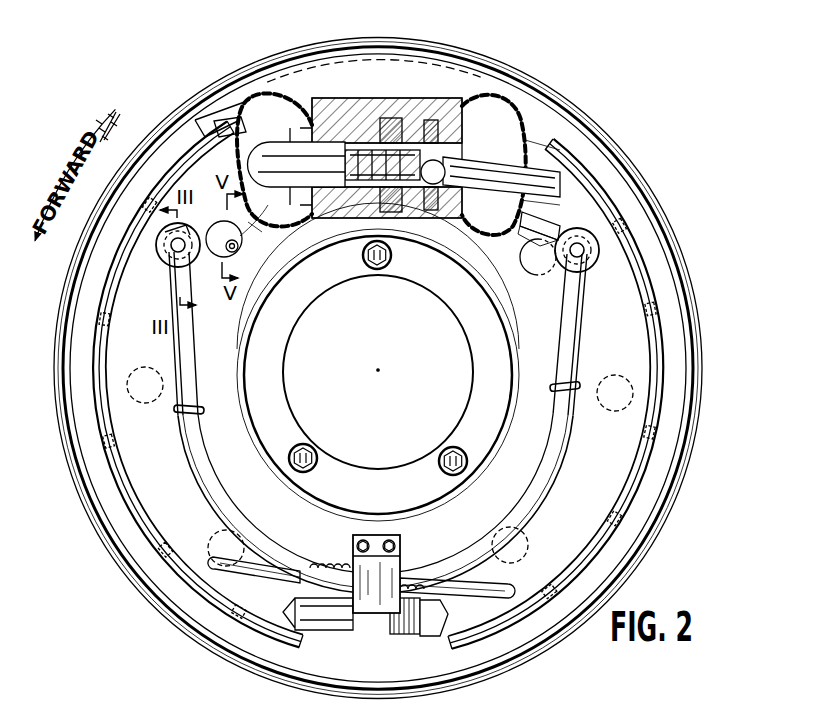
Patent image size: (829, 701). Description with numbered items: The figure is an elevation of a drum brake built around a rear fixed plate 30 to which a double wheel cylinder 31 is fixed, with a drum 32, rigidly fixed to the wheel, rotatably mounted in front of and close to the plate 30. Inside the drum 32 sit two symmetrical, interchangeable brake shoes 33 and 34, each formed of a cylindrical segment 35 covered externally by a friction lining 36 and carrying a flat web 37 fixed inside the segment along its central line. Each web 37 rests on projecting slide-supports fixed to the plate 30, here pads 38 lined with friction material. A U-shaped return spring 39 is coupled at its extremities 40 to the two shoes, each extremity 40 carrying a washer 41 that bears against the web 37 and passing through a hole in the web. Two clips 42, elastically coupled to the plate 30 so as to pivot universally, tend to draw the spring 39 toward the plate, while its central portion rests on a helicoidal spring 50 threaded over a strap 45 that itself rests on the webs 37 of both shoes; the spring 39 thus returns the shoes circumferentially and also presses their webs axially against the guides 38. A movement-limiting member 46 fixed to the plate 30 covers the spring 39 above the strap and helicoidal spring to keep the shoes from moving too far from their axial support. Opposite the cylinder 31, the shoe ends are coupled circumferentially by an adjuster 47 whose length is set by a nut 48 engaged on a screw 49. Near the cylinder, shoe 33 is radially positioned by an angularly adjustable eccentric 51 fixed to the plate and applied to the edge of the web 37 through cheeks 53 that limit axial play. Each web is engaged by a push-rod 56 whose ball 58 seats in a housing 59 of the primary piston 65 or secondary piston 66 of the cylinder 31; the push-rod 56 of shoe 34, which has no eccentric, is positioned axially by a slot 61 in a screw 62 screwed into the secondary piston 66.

The rear fixed plate 30 is at (276, 377).
The double wheel cylinder 31 is at (311, 112).
The drum 32 is at (426, 82).
The brake shoe 33 is at (182, 158).
The brake shoe 34 is at (600, 181).
The cylindrical segment 35 is at (125, 466).
The friction lining 36 is at (136, 535).
The flat web 37 is at (194, 298).
The pads 38 is at (146, 404).
The return spring 39 is at (241, 511).
The extremity of return spring 40 is at (165, 240).
The washer 41 is at (170, 262).
The clips 42 is at (199, 413).
The strap 45 is at (258, 565).
The movement-limiting member 46 is at (372, 604).
The adjuster 47 is at (328, 632).
The nut 48 is at (394, 634).
The screw 49 is at (408, 636).
The helicoidal spring 50 is at (328, 565).
The eccentric 51 is at (239, 246).
The cheeks 53 is at (185, 242).
The push-rod 56 is at (536, 208).
The ball 58 is at (348, 228).
The housing 59 is at (246, 240).
The slot 61 is at (517, 168).
The screw 62 is at (517, 140).
The primary piston 65 is at (321, 140).
The secondary piston 66 is at (488, 128).